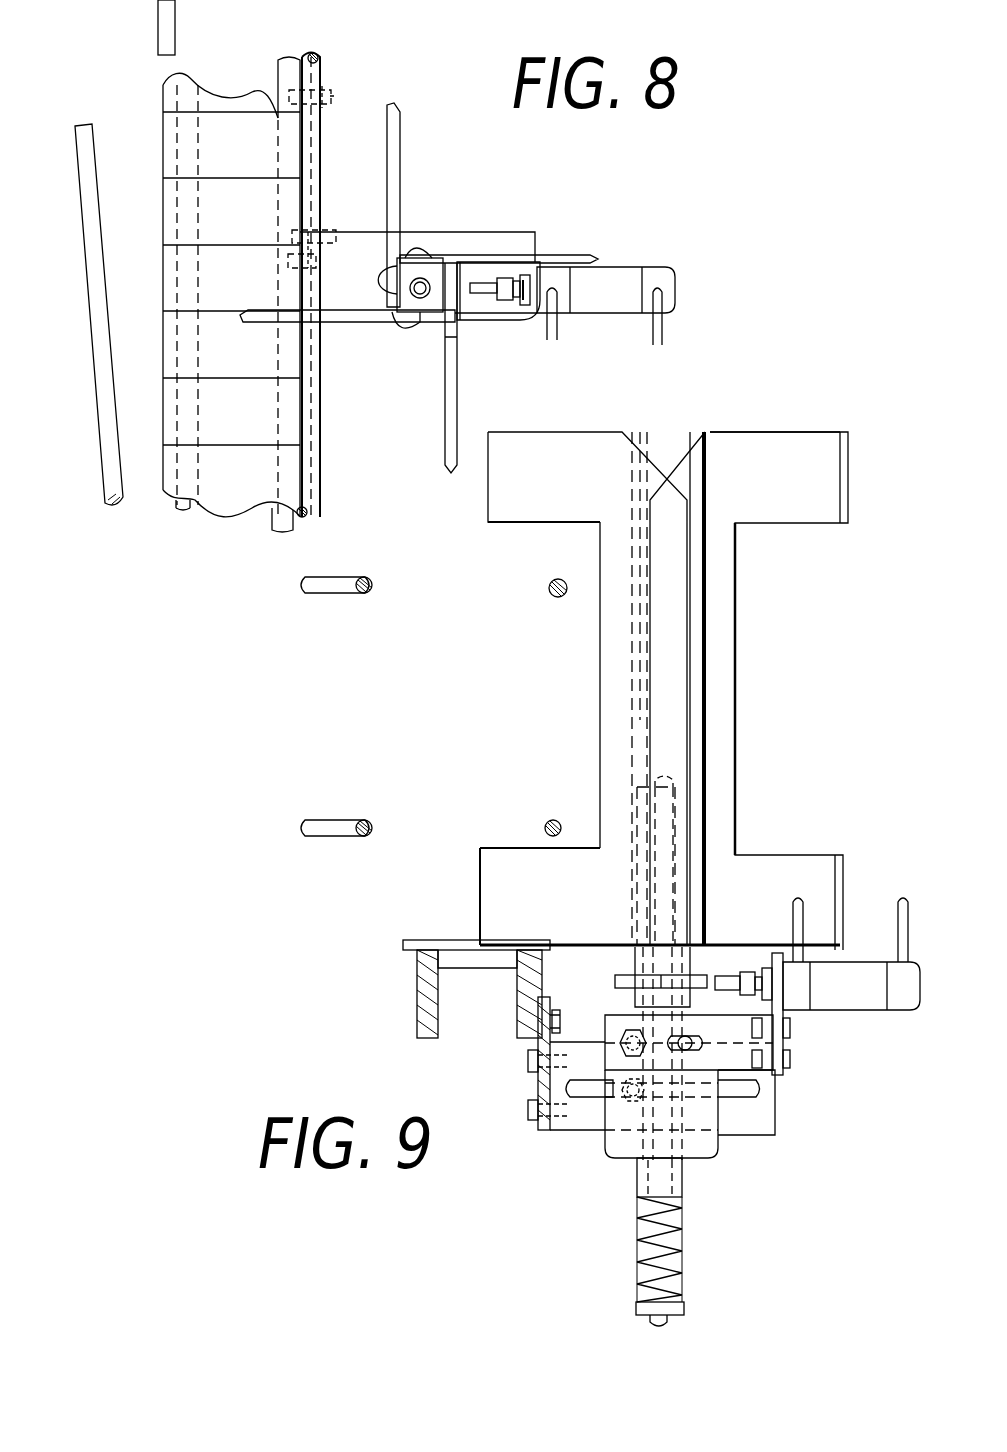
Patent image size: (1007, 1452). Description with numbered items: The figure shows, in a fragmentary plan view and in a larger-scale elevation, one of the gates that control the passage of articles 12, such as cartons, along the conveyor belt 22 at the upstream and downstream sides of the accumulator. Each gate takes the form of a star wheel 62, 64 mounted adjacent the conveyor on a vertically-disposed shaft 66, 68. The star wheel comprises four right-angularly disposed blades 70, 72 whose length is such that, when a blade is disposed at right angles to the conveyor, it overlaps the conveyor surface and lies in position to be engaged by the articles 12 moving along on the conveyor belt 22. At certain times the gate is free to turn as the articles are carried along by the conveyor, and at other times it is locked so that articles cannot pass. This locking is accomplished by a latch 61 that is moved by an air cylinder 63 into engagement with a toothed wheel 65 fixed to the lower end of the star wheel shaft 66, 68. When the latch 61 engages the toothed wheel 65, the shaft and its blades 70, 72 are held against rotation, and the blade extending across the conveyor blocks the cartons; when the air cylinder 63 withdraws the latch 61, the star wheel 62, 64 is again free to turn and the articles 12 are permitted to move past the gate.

In FIG. 8, the articles 12 is at (202, 219).
In FIG. 9, the conveyor belt 22 is at (430, 940).
In FIG. 8, the latches 61 is at (488, 287).
In FIG. 9, the latches 61 is at (718, 975).
In FIG. 9, the star wheel 62 is at (676, 691).
In FIG. 9, the star wheel 64 is at (760, 612).
In FIG. 8, the air cylinders 63 is at (620, 313).
In FIG. 9, the air cylinders 63 is at (880, 1010).
In FIG. 8, the toothed wheels 65 is at (426, 266).
In FIG. 9, the toothed wheels 65 is at (620, 978).
In FIG. 9, the shaft 66 is at (738, 1041).
In FIG. 9, the shaft 68 is at (676, 820).
In FIG. 8, the blades 70 is at (442, 205).
In FIG. 9, the blades 70 is at (639, 621).
In FIG. 8, the blades 72 is at (411, 148).
In FIG. 9, the blades 72 is at (748, 437).